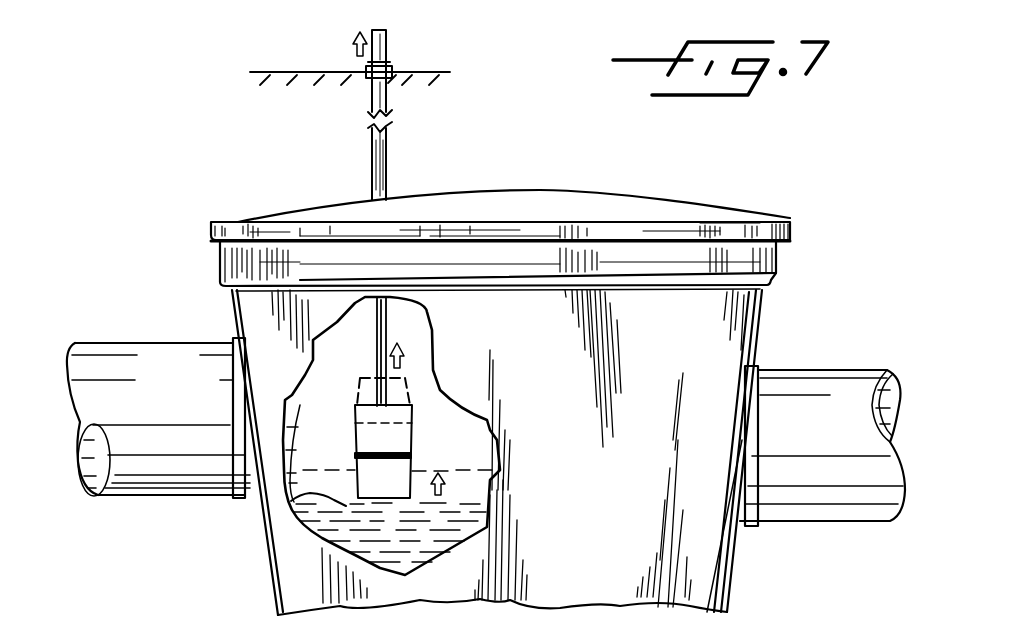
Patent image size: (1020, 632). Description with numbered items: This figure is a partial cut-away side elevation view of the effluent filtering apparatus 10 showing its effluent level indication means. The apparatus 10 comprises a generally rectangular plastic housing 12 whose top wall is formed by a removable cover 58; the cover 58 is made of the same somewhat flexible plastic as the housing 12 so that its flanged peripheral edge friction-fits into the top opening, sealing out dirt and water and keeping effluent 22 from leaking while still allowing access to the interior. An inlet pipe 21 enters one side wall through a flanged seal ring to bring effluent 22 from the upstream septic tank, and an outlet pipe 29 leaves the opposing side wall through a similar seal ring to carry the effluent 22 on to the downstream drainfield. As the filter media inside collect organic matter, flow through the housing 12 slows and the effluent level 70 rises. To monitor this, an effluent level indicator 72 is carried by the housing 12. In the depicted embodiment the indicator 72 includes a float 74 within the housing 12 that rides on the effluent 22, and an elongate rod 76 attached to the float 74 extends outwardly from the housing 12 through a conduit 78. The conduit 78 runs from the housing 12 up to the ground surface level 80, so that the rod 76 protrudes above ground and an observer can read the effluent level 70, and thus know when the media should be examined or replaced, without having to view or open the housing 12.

The effluent filtering apparatus 10 is at (781, 181).
The housing 12 is at (702, 573).
The inlet pipe 21 is at (138, 372).
The effluent 22 is at (352, 528).
The outlet pipe 29 is at (833, 398).
The removable cover 58 is at (792, 222).
The effluent level 70 is at (286, 500).
The effluent level indicator 72 is at (416, 130).
The float 74 is at (382, 446).
The elongate rod 76 is at (389, 335).
The conduit 78 is at (380, 181).
The ground surface level 80 is at (270, 70).